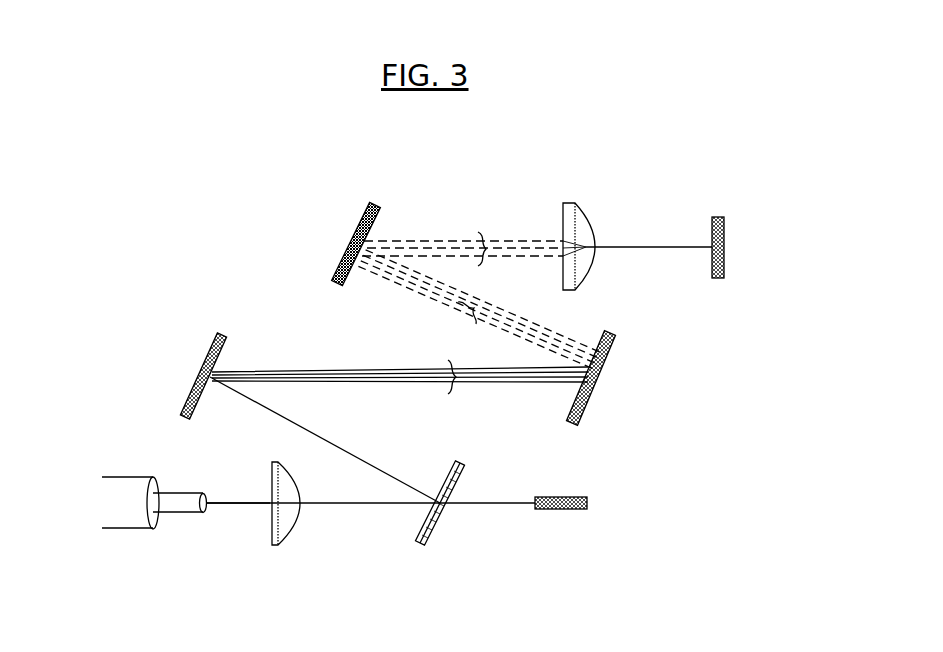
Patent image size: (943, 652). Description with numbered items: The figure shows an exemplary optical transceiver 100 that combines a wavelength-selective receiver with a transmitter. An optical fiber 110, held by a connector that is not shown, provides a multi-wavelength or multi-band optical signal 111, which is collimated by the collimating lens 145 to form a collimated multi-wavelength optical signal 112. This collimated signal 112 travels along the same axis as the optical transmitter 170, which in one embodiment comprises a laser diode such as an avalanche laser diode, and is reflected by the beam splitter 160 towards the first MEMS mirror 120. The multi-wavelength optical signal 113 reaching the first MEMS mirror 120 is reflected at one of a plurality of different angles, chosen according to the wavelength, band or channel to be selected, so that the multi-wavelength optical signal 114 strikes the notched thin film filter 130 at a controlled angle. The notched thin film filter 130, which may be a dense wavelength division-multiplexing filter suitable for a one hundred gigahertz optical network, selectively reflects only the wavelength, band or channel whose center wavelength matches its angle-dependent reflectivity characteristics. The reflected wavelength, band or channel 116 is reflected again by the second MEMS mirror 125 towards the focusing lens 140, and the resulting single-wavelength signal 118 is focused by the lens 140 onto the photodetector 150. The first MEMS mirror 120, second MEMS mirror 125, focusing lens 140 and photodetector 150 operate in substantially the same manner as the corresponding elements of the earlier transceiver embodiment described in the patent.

The optical transceiver 100 is at (242, 162).
The optical fiber 110 is at (147, 533).
The multi-wavelength optical signal 111 is at (228, 506).
The collimated multi-wavelength optical signal 112 is at (341, 505).
The multi-wavelength optical signal 113 is at (357, 455).
The multi-wavelength optical signal 114 is at (450, 364).
The reflected wavelength, band or channel 116 is at (470, 301).
The single-wavelength optical signal 118 is at (481, 232).
The first MEMS mirror 120 is at (205, 373).
The second MEMS mirror 125 is at (357, 237).
The notched thin film filter 130 is at (608, 350).
The focusing lens 140 is at (590, 222).
The collimating lens 145 is at (272, 462).
The photodetector 150 is at (726, 255).
The beam splitter 160 is at (462, 468).
The optical transmitter 170 is at (568, 497).